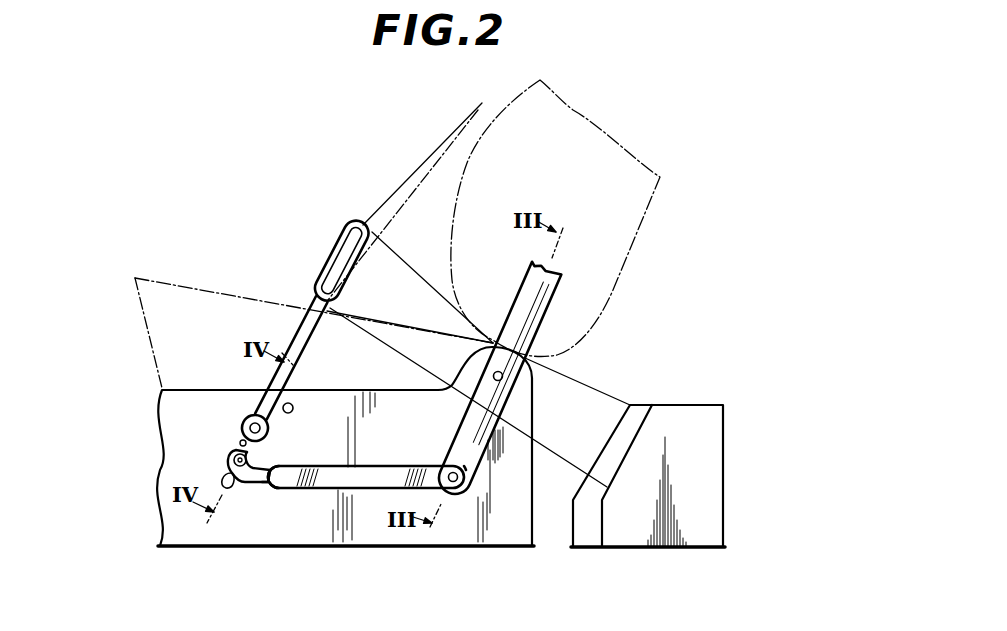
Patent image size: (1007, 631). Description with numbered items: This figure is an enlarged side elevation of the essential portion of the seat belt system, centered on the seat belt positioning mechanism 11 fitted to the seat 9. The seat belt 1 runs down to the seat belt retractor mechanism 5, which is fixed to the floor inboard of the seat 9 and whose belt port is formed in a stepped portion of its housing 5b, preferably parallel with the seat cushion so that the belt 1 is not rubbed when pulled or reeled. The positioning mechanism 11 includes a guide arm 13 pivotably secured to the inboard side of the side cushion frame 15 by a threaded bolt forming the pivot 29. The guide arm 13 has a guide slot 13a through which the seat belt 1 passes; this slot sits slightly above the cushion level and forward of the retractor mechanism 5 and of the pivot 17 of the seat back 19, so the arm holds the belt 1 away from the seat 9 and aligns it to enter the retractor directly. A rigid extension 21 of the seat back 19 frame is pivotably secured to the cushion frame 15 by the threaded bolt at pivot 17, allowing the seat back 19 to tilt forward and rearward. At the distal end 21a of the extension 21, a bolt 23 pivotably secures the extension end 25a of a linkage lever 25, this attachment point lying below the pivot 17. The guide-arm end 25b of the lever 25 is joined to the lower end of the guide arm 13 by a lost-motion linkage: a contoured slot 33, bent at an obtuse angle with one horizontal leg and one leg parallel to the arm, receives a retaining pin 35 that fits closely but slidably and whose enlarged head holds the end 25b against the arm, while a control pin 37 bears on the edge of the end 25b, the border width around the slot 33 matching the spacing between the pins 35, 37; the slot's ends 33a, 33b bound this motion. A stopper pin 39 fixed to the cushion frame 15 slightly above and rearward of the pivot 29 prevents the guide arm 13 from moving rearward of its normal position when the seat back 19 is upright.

The seat belt 1 is at (422, 163).
The seat belt retractor mechanism 5 is at (706, 404).
The housing 5b is at (665, 548).
The seat 9 is at (192, 283).
The seat belt positioning mechanism 11 is at (353, 495).
The guide arm 13 is at (296, 310).
The guide slot 13a is at (340, 256).
The side cushion frame 15 is at (462, 533).
The pivot 17 is at (503, 378).
The seat back 19 is at (640, 240).
The rigid extension 21 is at (535, 318).
The distal end 21a is at (466, 468).
The bolt 23 is at (463, 486).
The linkage lever 25 is at (372, 482).
The extension end 25a is at (448, 470).
The guide-arm end 25b is at (283, 480).
The pivot 29 is at (255, 422).
The contoured slot 33 is at (257, 483).
The hook pin 33a is at (236, 460).
The hook end 33b is at (270, 466).
The retaining pin 35 is at (234, 490).
The control pin 37 is at (241, 440).
The stopper pin 39 is at (294, 408).